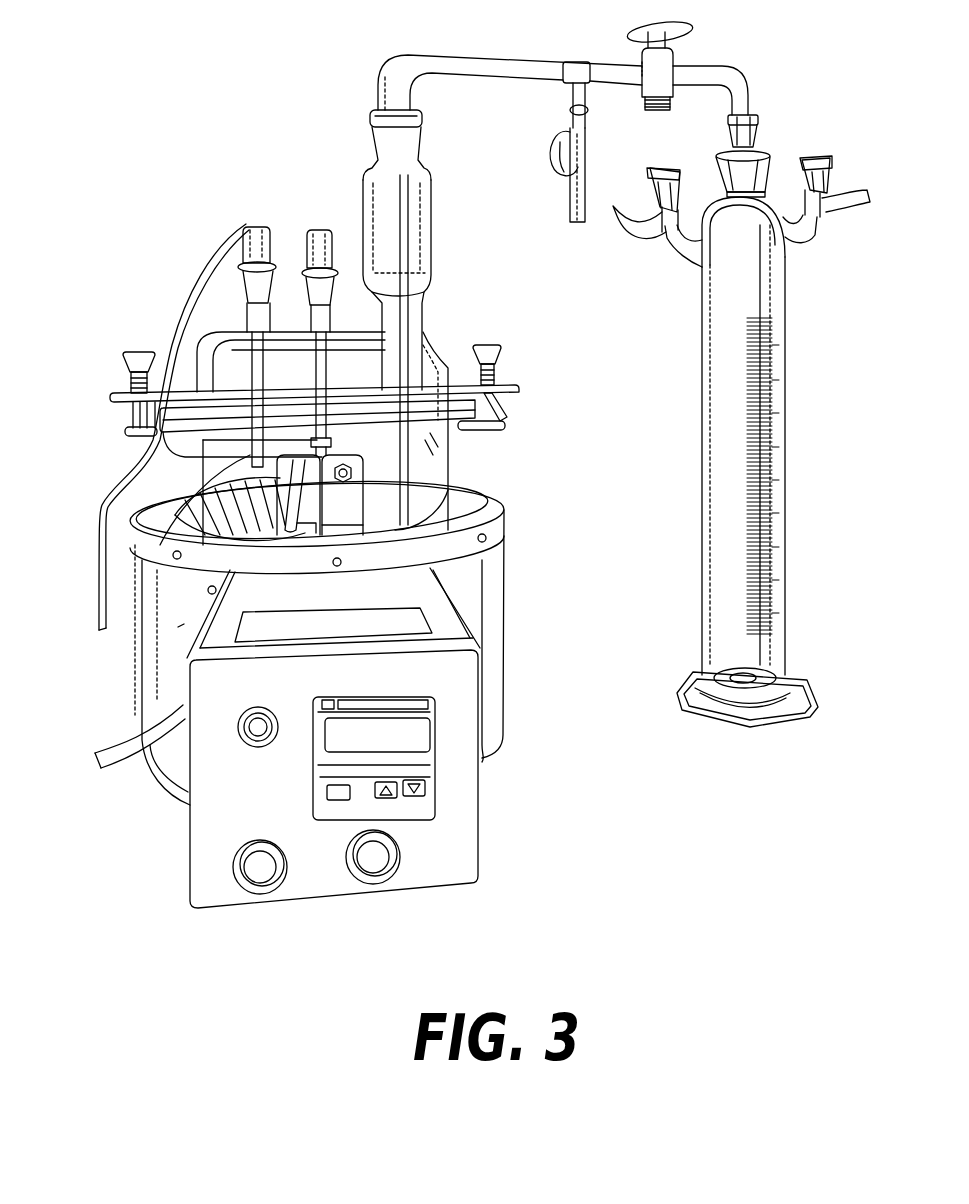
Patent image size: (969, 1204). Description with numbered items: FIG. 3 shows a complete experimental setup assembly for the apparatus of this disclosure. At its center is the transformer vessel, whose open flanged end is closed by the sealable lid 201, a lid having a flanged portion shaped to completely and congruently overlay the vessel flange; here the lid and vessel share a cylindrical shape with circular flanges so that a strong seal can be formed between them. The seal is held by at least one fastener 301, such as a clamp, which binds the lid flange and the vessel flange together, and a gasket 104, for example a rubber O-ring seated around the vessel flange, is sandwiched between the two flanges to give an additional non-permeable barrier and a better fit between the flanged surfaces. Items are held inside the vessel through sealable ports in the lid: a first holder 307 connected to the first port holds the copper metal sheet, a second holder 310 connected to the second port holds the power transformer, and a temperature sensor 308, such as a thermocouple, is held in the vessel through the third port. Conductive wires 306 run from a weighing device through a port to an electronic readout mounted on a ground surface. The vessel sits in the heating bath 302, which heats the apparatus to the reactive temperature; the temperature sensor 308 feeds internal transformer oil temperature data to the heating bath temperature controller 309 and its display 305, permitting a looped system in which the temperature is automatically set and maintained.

The gasket 104 is at (155, 450).
The sealable lid 201 is at (428, 364).
The fastener 301 is at (110, 395).
The heating bath 302 is at (133, 522).
The display 305 is at (405, 763).
The conductive wires 306 is at (185, 288).
The first holder 307 is at (180, 626).
The temperature sensor 308 is at (340, 252).
The heating bath temperature controller 309 is at (433, 790).
The second holder 310 is at (325, 383).